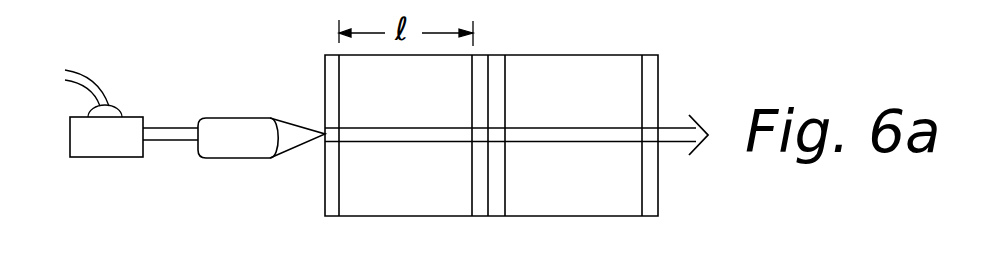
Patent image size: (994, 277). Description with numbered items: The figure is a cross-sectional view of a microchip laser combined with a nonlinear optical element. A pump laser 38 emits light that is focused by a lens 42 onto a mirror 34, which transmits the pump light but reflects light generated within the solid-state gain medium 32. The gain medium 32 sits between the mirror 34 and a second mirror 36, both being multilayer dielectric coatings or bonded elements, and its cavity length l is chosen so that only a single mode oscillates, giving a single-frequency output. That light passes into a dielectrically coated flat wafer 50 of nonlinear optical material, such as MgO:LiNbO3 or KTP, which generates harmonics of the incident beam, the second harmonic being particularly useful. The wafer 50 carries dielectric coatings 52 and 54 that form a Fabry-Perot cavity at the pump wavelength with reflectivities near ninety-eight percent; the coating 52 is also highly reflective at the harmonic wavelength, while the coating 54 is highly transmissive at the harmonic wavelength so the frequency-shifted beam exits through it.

The solid-state gain medium 32 is at (398, 208).
The mirror 34 is at (327, 55).
The mirror 36 is at (477, 54).
The laser 38 is at (115, 157).
The lens 42 is at (232, 158).
The wafer of nonlinear optical material 50 is at (587, 208).
The dielectric coating 52 is at (497, 218).
The dielectric coating 54 is at (650, 218).